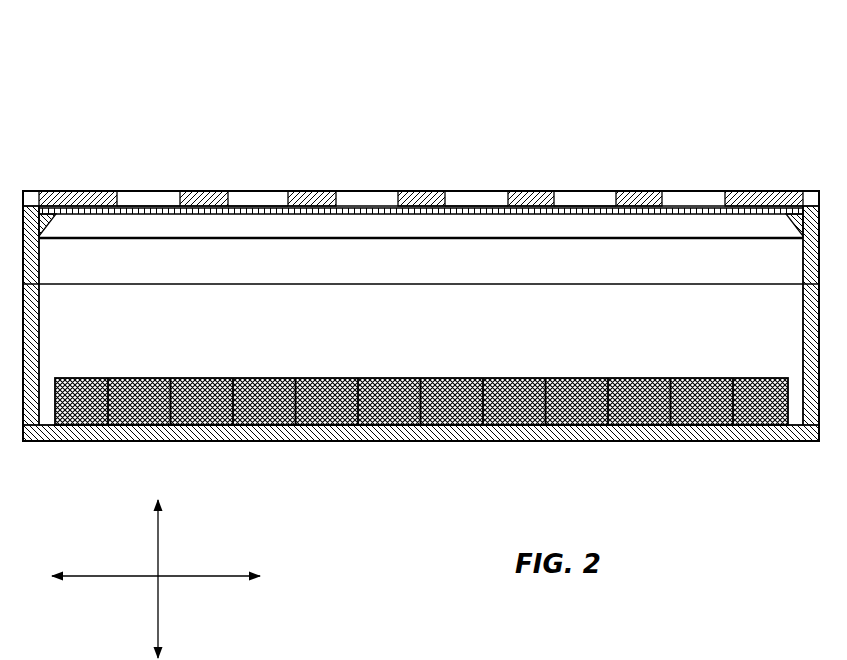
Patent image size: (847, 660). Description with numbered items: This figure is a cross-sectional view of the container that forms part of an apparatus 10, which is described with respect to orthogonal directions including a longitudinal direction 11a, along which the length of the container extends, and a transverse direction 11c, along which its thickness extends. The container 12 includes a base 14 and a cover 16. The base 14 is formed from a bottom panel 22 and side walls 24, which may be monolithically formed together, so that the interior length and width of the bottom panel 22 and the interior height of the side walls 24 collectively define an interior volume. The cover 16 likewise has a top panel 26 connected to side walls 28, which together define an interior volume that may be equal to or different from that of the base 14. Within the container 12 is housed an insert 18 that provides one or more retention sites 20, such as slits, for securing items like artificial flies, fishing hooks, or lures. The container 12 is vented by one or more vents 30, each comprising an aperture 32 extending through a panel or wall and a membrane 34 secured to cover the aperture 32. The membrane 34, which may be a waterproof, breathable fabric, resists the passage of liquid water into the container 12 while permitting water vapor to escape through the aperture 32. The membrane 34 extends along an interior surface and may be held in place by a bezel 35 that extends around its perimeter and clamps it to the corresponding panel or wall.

The apparatus 10 is at (667, 102).
The longitudinal direction 11a is at (173, 576).
The transverse direction 11c is at (158, 542).
The container 12 is at (703, 157).
The base 14 is at (743, 441).
The cover 16 is at (768, 190).
The insert 18 is at (260, 393).
The retention site 20 is at (295, 398).
The bottom panel 22 is at (332, 441).
The side wall 24 is at (33, 311).
The top panel 26 is at (107, 200).
The side wall 28 is at (33, 269).
The vent 30 is at (253, 190).
The aperture 32 is at (440, 202).
The membrane 34 is at (390, 210).
The bezel 35 is at (50, 231).